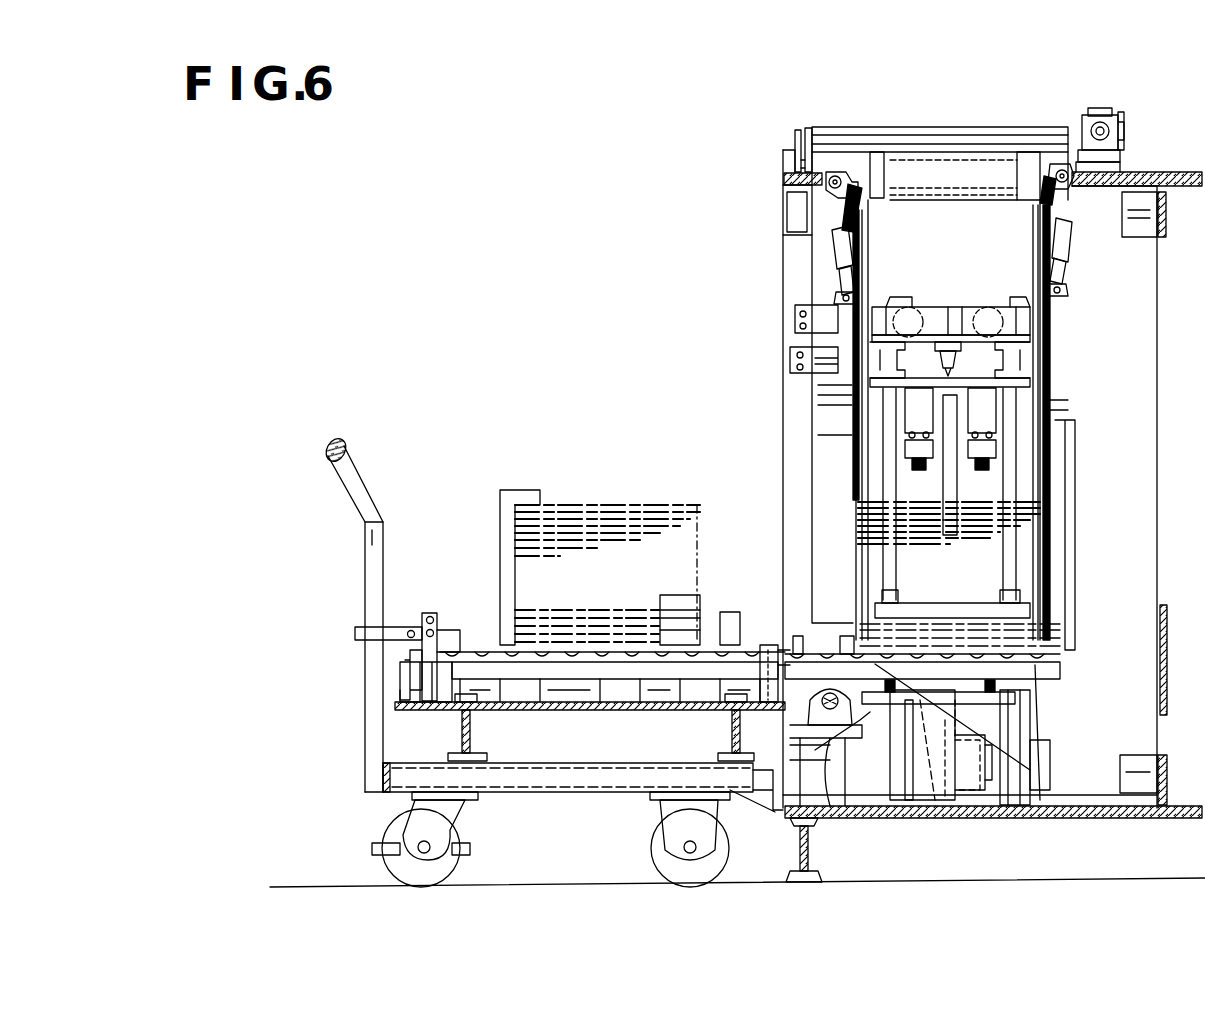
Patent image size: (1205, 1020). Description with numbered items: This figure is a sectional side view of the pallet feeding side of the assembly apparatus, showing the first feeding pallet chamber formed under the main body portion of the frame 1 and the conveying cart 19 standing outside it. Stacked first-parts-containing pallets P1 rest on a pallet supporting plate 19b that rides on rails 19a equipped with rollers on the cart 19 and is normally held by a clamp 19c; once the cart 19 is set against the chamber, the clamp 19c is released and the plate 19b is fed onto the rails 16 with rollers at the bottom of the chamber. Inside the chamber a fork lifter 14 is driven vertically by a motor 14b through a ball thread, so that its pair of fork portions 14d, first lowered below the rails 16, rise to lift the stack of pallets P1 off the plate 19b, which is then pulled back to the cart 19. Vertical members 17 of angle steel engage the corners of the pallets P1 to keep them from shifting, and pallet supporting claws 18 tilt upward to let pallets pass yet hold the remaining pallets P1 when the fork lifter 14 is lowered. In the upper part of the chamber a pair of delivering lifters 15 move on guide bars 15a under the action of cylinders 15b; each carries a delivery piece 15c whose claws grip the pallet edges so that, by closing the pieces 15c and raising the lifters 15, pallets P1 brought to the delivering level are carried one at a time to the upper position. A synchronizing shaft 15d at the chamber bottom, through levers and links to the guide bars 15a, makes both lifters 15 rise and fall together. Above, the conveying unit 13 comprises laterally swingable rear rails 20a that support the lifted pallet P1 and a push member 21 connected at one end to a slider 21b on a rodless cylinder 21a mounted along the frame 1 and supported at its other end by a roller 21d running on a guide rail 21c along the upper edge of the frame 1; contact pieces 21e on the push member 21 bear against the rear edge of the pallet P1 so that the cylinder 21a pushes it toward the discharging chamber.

The frame 1 is at (797, 290).
The conveying unit 13 is at (1108, 102).
The fork lifter 14 is at (1010, 795).
The motor 14b is at (908, 790).
The fork portions 14d is at (878, 790).
The delivering lifters 15 is at (942, 295).
The guide bars 15a is at (878, 480).
The cylinders 15b is at (950, 500).
The delivery piece 15c is at (1030, 322).
The synchronizing shaft 15d is at (822, 820).
The rails with rollers 16 is at (1018, 662).
The angle steel members 17 is at (820, 415).
The pallet supporting claws 18 is at (915, 470).
The conveying cart 19 is at (392, 760).
The rails equipped with rollers 19a is at (570, 695).
The pallet supporting plate 19b is at (645, 695).
The clamp 19c is at (452, 632).
The rear rails 20a is at (855, 185).
The push member 21 is at (935, 128).
The rodless cylinder 21a is at (1122, 131).
The slider 21b is at (1120, 116).
The guide rail 21c is at (783, 150).
The roller 21d is at (796, 138).
The contact pieces 21e is at (918, 178).
The first-parts-containing pallets P1 is at (855, 508).